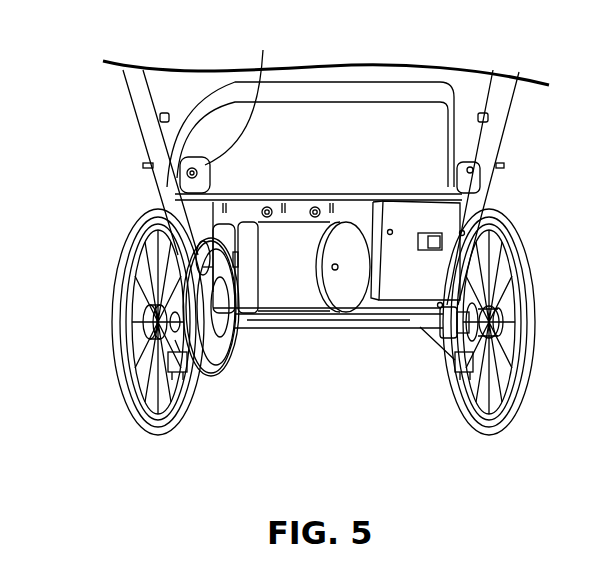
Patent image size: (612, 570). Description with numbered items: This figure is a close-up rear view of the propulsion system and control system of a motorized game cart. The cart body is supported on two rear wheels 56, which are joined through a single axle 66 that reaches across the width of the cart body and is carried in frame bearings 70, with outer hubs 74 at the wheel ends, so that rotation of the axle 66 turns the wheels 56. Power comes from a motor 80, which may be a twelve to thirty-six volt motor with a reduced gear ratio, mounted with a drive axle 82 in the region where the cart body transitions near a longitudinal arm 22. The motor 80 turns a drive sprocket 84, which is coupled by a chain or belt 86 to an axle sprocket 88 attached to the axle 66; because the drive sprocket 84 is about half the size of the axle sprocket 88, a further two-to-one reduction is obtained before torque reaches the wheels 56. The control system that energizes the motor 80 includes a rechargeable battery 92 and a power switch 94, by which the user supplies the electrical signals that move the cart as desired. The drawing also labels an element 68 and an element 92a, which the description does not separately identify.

The right longitudinal arm 22 is at (240, 343).
The rear wheel 56 is at (77, 308).
The axle 66 is at (348, 332).
The axle shaft 68 is at (314, 329).
The frame bearing 70 is at (448, 329).
The outer hub 74 is at (504, 322).
The motor 80 is at (343, 238).
The drive axle 82 is at (172, 188).
The drive sprocket 84 is at (200, 265).
The chain 86 is at (157, 321).
The axle sprocket 88 is at (200, 358).
The rechargeable battery 92 is at (380, 124).
The seat frame arm 92a is at (244, 92).
The power switch 94 is at (439, 262).